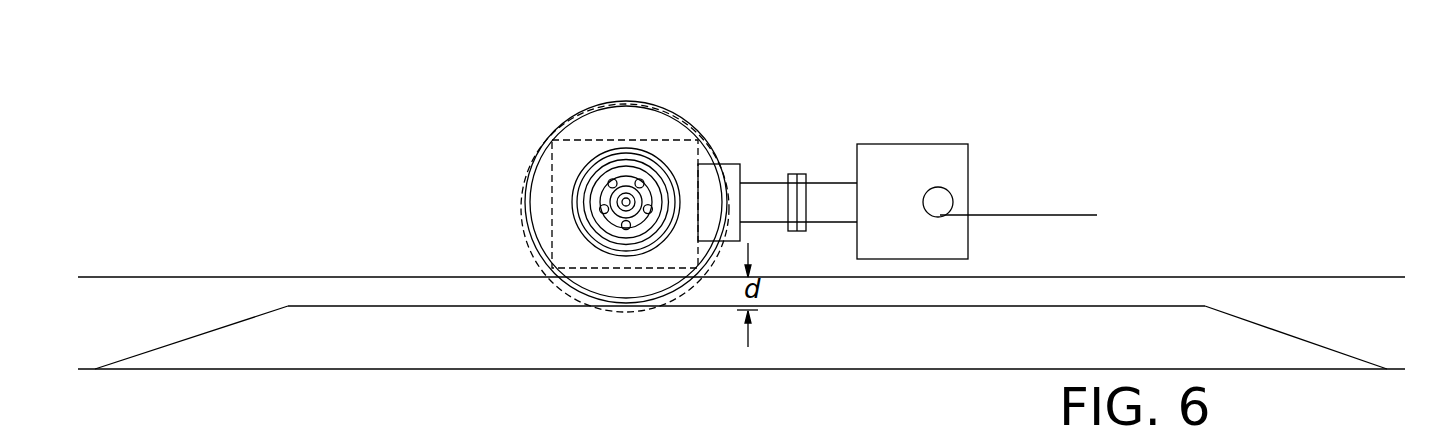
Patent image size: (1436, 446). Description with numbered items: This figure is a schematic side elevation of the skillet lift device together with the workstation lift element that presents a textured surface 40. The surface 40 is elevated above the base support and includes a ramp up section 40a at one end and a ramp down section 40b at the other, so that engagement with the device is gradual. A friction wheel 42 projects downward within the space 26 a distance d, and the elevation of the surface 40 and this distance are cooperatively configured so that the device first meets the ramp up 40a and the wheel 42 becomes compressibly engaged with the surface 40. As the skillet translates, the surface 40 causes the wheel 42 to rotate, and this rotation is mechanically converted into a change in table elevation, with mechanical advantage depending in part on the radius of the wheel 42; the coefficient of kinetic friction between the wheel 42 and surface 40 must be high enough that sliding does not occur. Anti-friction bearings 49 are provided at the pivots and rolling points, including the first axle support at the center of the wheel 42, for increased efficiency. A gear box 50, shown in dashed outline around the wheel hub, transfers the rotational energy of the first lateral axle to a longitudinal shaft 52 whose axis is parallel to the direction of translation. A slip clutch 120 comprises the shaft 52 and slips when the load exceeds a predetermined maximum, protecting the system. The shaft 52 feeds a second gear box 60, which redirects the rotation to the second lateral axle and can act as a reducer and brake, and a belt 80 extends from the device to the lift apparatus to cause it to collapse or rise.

The space 26 is at (323, 355).
The textured surface 40 is at (362, 305).
The ramp up section 40a is at (207, 330).
The ramp down section 40b is at (1302, 333).
The friction wheel 42 is at (527, 237).
The anti-friction bearings 49 is at (611, 186).
The gear box 50 is at (552, 197).
The longitudinal shaft 52 is at (755, 181).
The second gear box 60 is at (930, 144).
The belt 80 is at (1065, 215).
The slip clutch 120 is at (798, 173).